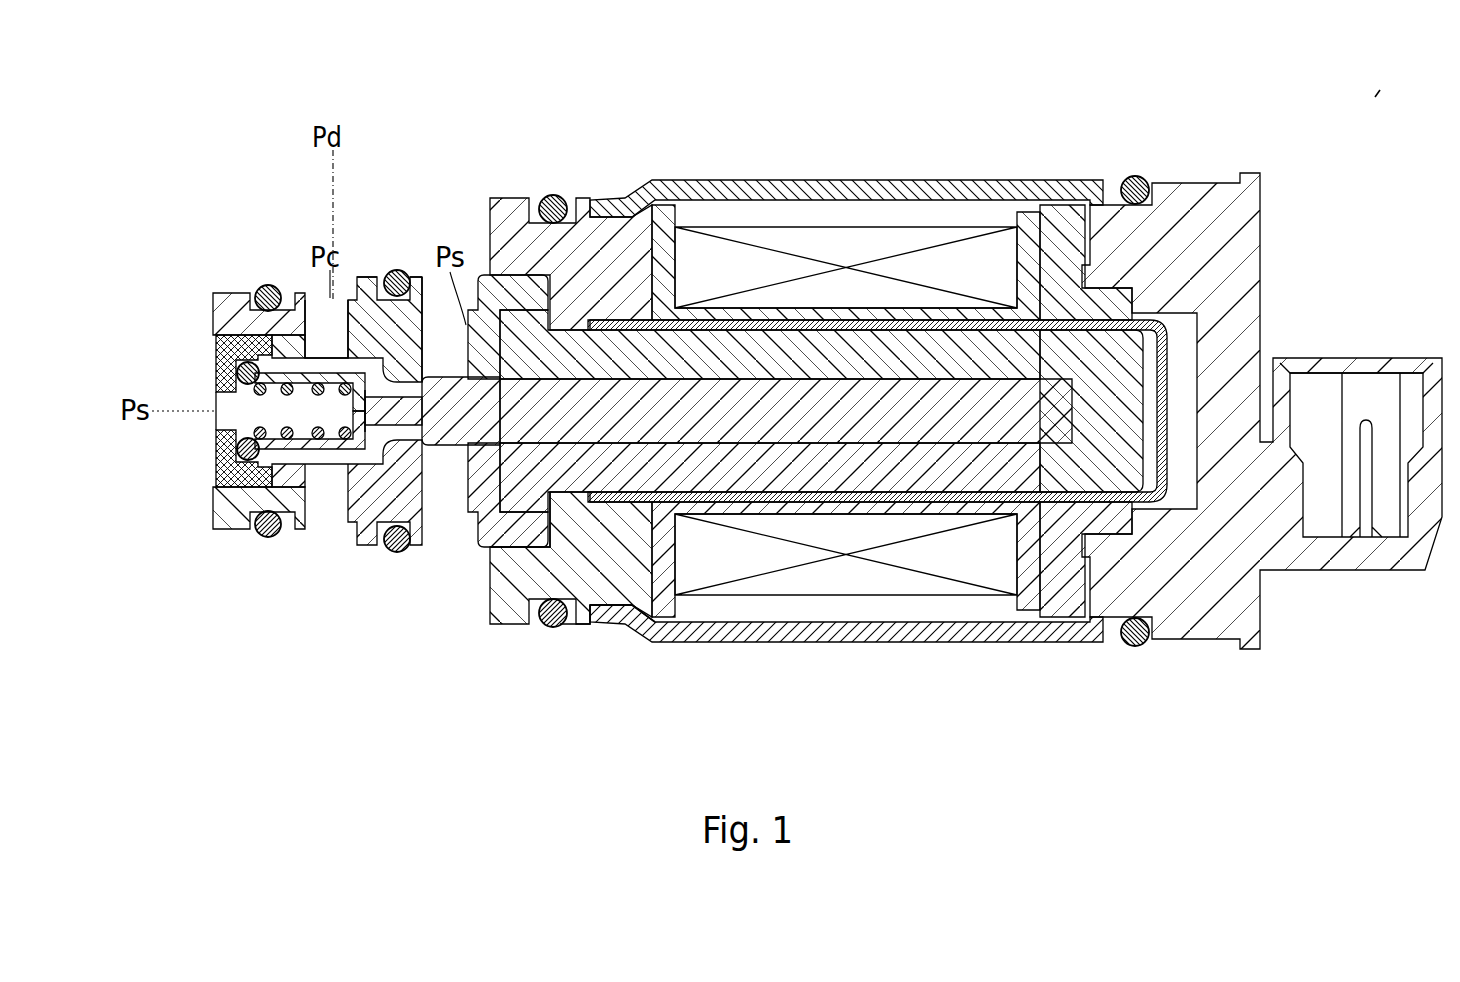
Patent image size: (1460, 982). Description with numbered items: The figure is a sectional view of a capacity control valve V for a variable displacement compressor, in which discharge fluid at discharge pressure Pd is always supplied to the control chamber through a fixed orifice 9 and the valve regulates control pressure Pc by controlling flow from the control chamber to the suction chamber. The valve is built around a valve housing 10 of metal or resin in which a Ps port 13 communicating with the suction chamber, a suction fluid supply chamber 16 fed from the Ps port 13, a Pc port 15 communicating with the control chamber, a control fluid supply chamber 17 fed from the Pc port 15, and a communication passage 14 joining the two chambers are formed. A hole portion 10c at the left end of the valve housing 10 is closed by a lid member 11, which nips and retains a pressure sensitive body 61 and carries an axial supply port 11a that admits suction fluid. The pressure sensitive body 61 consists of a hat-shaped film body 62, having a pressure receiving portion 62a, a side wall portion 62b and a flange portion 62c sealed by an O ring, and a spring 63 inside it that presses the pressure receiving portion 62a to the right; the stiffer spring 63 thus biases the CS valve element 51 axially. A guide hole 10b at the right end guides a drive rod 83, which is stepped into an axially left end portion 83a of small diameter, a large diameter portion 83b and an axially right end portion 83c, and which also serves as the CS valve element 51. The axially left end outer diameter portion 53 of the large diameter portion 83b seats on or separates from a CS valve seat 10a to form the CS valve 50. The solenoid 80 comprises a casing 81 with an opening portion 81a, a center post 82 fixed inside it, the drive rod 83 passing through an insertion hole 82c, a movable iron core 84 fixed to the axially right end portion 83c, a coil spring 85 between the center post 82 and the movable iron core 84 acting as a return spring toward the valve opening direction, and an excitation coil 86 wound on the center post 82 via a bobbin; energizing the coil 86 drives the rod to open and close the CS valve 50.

The fixed orifice 9 is at (338, 170).
The valve housing 10 is at (384, 421).
The CS valve seat 10a is at (478, 536).
The guide hole 10b is at (583, 628).
The hole portion 10c is at (222, 345).
The lid member 11 is at (180, 426).
The supply port 11a is at (241, 378).
The Ps port 13 is at (445, 305).
The communication passage 14 is at (400, 428).
The Pc port 15 is at (328, 362).
The suction fluid supply chamber 16 is at (470, 330).
The control fluid supply chamber 17 is at (385, 358).
The CS valve 50 is at (667, 414).
The CS valve element 51 is at (612, 392).
The axially left end outer diameter portion 53 is at (466, 447).
The pressure sensitive body 61 is at (290, 448).
The film body 62 is at (296, 421).
The pressure receiving portion 62a is at (396, 269).
The side wall portion 62b is at (322, 368).
The flange portion 62c is at (258, 287).
The spring 63 is at (300, 442).
The solenoid 80 is at (1252, 375).
The casing 81 is at (846, 457).
The opening portion 81a is at (656, 610).
The center post 82 is at (846, 422).
The insertion hole 82c is at (885, 316).
The drive rod 83 is at (1115, 392).
The axially left end portion 83a is at (368, 455).
The large diameter portion 83b is at (692, 392).
The axially right end portion 83c is at (1138, 300).
The movable iron core 84 is at (1135, 648).
The coil spring 85 is at (1108, 640).
The coil 86 is at (915, 560).
The capacity control valve V is at (1378, 95).